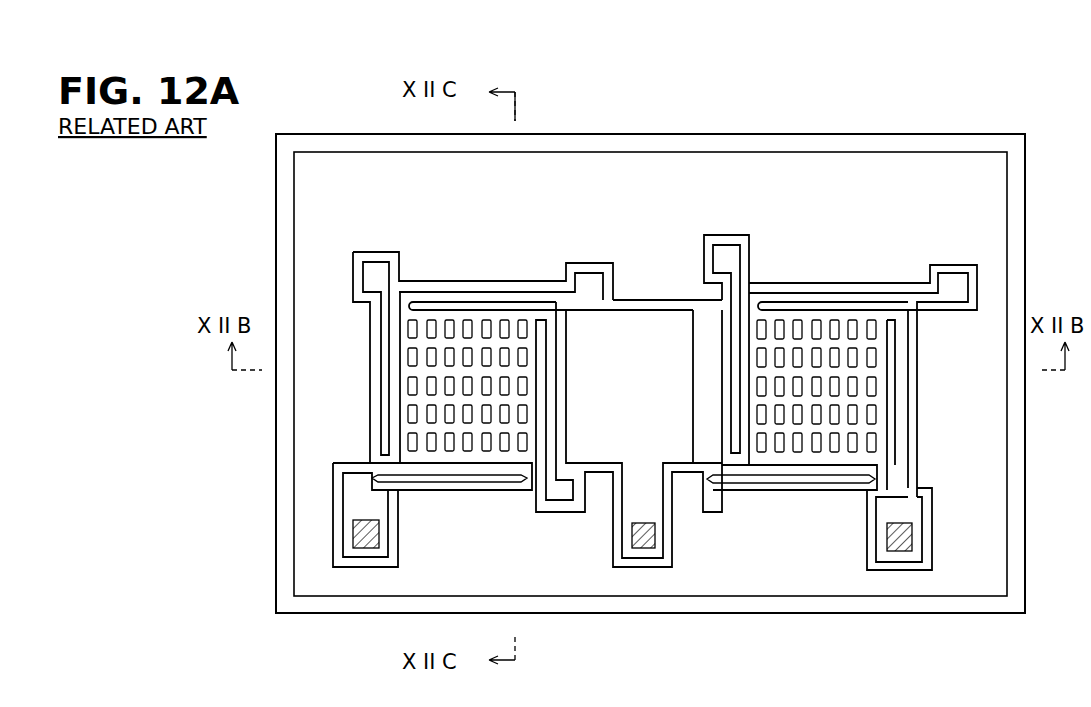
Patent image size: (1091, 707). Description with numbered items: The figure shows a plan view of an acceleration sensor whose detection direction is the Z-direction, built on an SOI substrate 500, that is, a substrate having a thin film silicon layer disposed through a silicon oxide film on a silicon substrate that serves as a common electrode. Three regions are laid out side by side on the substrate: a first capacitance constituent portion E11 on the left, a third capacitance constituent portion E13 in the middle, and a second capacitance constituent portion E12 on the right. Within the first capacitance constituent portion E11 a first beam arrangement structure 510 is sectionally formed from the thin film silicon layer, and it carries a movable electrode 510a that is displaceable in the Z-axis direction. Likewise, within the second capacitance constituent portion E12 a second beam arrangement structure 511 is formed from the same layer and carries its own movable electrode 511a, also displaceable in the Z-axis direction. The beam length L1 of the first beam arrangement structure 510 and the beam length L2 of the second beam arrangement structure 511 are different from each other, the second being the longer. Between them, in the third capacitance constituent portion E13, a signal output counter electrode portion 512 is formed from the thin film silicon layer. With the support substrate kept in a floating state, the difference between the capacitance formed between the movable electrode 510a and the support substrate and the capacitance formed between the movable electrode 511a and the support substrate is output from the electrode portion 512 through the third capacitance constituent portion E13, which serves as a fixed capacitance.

The SOI substrate 500 is at (748, 614).
The first beam arrangement structure 510 is at (520, 282).
The movable electrode 510a is at (455, 303).
The second beam arrangement structure 511 is at (883, 284).
The movable electrode 511a is at (797, 304).
The signal output counter electrode portion 512 is at (660, 302).
The first capacitance constituent portion E11 is at (527, 376).
The second capacitance constituent portion E12 is at (840, 379).
The third capacitance constituent portion E13 is at (644, 374).
The beam length L1 is at (460, 483).
The beam length L2 is at (790, 484).